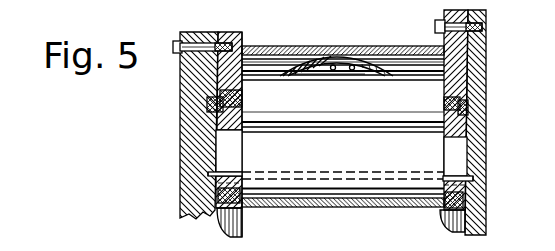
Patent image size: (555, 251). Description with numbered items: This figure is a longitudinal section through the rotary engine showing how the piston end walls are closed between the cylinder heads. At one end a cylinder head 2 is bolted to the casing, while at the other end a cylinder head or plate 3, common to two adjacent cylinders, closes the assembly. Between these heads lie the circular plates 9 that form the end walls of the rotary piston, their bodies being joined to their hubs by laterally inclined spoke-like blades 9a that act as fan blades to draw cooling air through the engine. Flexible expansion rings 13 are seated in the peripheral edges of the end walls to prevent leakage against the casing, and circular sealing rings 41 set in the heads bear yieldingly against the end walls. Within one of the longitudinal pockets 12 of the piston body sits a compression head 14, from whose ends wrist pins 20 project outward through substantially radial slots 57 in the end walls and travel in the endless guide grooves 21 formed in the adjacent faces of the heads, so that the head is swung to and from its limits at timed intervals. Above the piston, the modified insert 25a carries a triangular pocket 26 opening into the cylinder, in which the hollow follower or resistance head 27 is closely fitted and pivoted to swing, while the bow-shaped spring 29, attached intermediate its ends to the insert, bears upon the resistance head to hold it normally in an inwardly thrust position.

The cylinder head 2 is at (182, 135).
The cylinder head or plate 3 is at (486, 133).
The circular plate 9 is at (232, 33).
The radial spoke-like blades 9a is at (242, 228).
The pocket 12 is at (372, 196).
The flexible expansion ring 13 is at (242, 97).
The compression head 14 is at (326, 167).
The wrist pin 20 is at (233, 173).
The guide groove 21 is at (208, 175).
The modified insert 25a is at (309, 44).
The pocket 26 is at (468, 67).
The follower or resistance head 27 is at (267, 79).
The bow-shaped spring 29 is at (378, 68).
The sealing ring 41 is at (185, 106).
The radial slot 57 is at (224, 153).